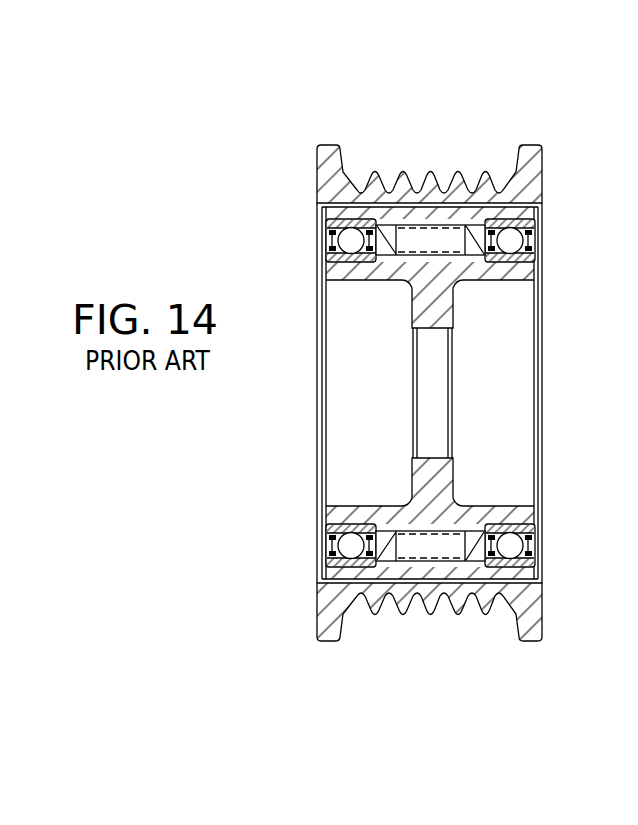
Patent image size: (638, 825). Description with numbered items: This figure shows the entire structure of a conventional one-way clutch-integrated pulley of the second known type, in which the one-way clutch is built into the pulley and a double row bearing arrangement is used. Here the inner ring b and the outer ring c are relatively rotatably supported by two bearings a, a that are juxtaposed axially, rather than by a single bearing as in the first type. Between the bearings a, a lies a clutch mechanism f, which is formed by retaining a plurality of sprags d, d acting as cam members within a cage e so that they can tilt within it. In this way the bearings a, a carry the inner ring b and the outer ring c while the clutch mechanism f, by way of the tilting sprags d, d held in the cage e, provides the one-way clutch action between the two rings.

The bearing a is at (355, 213).
The inner ring b is at (363, 281).
The outer ring c is at (347, 214).
The sprag d is at (425, 222).
The cage e is at (467, 222).
The clutch mechanism f is at (445, 220).